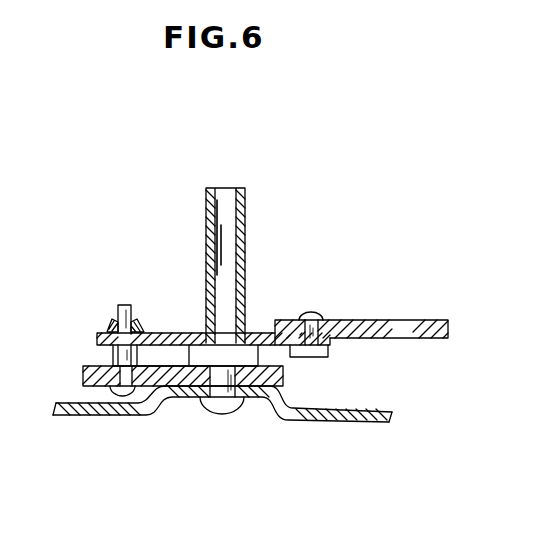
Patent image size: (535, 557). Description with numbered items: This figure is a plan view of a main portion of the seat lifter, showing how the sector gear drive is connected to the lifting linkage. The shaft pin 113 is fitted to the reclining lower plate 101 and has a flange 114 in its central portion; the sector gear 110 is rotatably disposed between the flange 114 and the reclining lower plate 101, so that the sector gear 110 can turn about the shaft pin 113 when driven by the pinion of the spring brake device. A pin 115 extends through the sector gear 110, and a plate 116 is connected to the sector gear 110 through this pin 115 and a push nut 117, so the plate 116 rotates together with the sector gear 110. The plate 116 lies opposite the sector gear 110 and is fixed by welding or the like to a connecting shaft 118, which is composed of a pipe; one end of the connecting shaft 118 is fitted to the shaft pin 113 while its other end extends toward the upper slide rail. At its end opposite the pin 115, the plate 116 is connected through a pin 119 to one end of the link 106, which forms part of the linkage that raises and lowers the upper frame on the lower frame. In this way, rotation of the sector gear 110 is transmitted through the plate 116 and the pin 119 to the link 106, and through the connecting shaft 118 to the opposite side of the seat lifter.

The reclining lower plate 101 is at (92, 417).
The link 106 is at (428, 320).
The sector gear 110 is at (285, 377).
The shaft pin 113 is at (233, 413).
The flange 114 is at (170, 332).
The pin 115 is at (137, 397).
The plate 116 is at (95, 330).
The push nut 117 is at (108, 318).
The connecting shaft 118 is at (247, 213).
The pin 119 is at (308, 312).